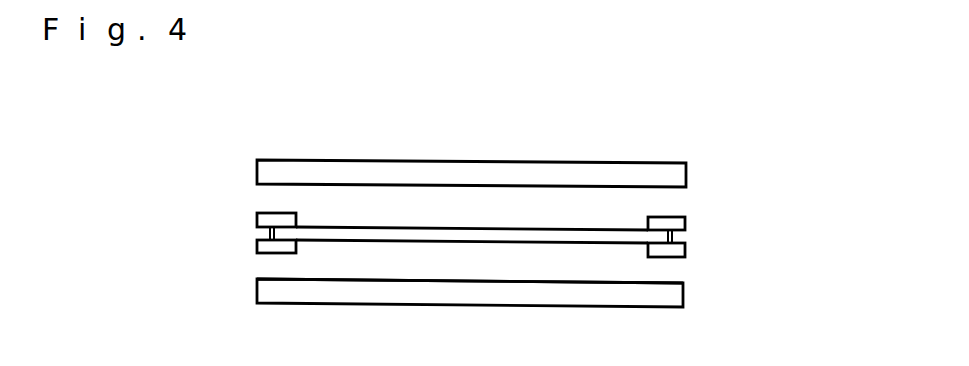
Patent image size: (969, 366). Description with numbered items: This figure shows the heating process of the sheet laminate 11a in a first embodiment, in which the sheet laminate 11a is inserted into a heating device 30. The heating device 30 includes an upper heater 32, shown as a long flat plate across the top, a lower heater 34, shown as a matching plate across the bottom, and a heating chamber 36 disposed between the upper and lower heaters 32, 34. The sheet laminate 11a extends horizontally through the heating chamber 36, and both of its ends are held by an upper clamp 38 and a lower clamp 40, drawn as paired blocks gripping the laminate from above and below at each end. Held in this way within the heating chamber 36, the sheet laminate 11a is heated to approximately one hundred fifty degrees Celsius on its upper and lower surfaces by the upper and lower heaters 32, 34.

The heating device 30 is at (692, 158).
The upper heater 32 is at (623, 172).
The lower heater 34 is at (660, 300).
The heating chamber 36 is at (673, 281).
The sheet laminate 11a is at (619, 233).
The upper clamp 38 is at (257, 218).
The lower clamp 40 is at (257, 245).